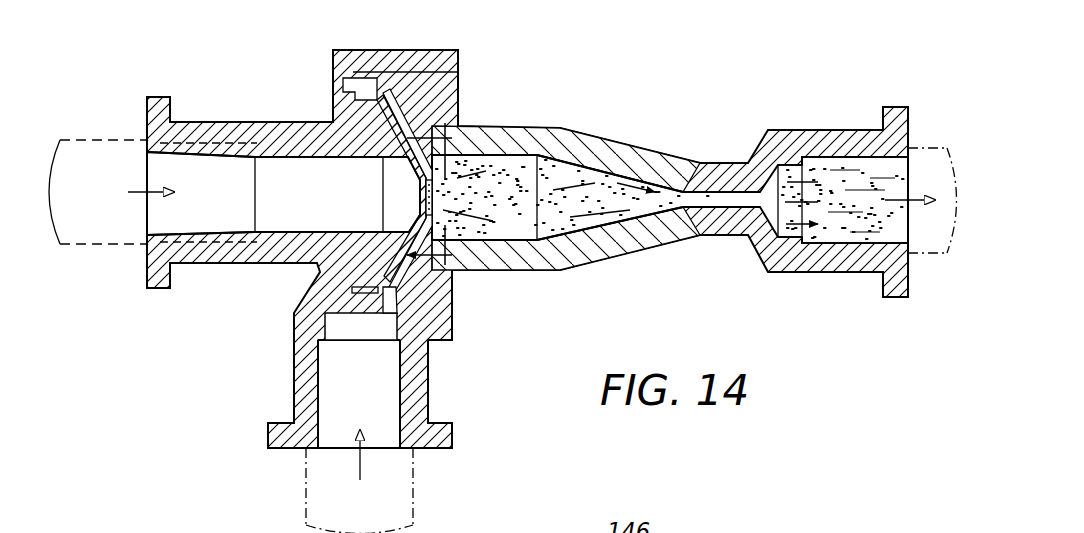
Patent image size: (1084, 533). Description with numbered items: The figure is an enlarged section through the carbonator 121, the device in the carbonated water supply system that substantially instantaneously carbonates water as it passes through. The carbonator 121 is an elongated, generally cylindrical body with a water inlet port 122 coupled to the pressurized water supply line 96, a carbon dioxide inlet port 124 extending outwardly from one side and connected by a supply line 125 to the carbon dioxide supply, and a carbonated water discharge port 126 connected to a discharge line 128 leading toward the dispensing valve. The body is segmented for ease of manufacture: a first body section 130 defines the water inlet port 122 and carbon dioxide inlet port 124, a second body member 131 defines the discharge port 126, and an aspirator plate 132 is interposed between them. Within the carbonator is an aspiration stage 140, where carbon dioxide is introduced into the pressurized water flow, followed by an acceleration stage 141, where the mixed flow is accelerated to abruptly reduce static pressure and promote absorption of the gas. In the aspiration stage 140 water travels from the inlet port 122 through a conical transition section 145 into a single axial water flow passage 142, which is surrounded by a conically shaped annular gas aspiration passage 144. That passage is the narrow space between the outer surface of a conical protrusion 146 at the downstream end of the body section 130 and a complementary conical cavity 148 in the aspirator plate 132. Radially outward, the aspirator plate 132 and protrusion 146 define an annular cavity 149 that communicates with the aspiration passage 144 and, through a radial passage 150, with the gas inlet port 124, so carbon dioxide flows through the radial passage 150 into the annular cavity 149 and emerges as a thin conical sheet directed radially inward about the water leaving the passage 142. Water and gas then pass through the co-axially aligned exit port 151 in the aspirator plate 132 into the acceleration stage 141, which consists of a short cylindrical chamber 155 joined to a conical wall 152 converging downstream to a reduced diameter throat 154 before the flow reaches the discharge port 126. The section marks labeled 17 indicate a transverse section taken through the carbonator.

The section line 17- 17 is at (447, 198).
The pressurized water supply line 96 is at (104, 135).
The carbonator 121 is at (235, 341).
The water inlet port 122 is at (199, 158).
The carbon dioxide inlet port 124 is at (325, 398).
The supply line 125 is at (306, 490).
The carbonated water discharge port 126 is at (888, 238).
The discharge line 128 is at (922, 150).
The first body section 130 is at (273, 134).
The second body member 131 is at (652, 240).
The aspirator plate 132 is at (458, 76).
The aspiration stage 140 is at (268, 273).
The acceleration stage 141 is at (565, 208).
The water flow passage 142 is at (413, 191).
The annular gas aspiration passage 144 is at (413, 100).
The conical transition section 145 is at (386, 170).
The conical protrusion 146 is at (417, 213).
The conical cavity 148 is at (445, 275).
The annular cavity 149 is at (362, 100).
The radial passage 150 is at (352, 315).
The exit port 151 is at (570, 198).
The conical wall 152 is at (597, 170).
The throat 154 is at (715, 198).
The short cylindrical chamber 155 is at (504, 157).